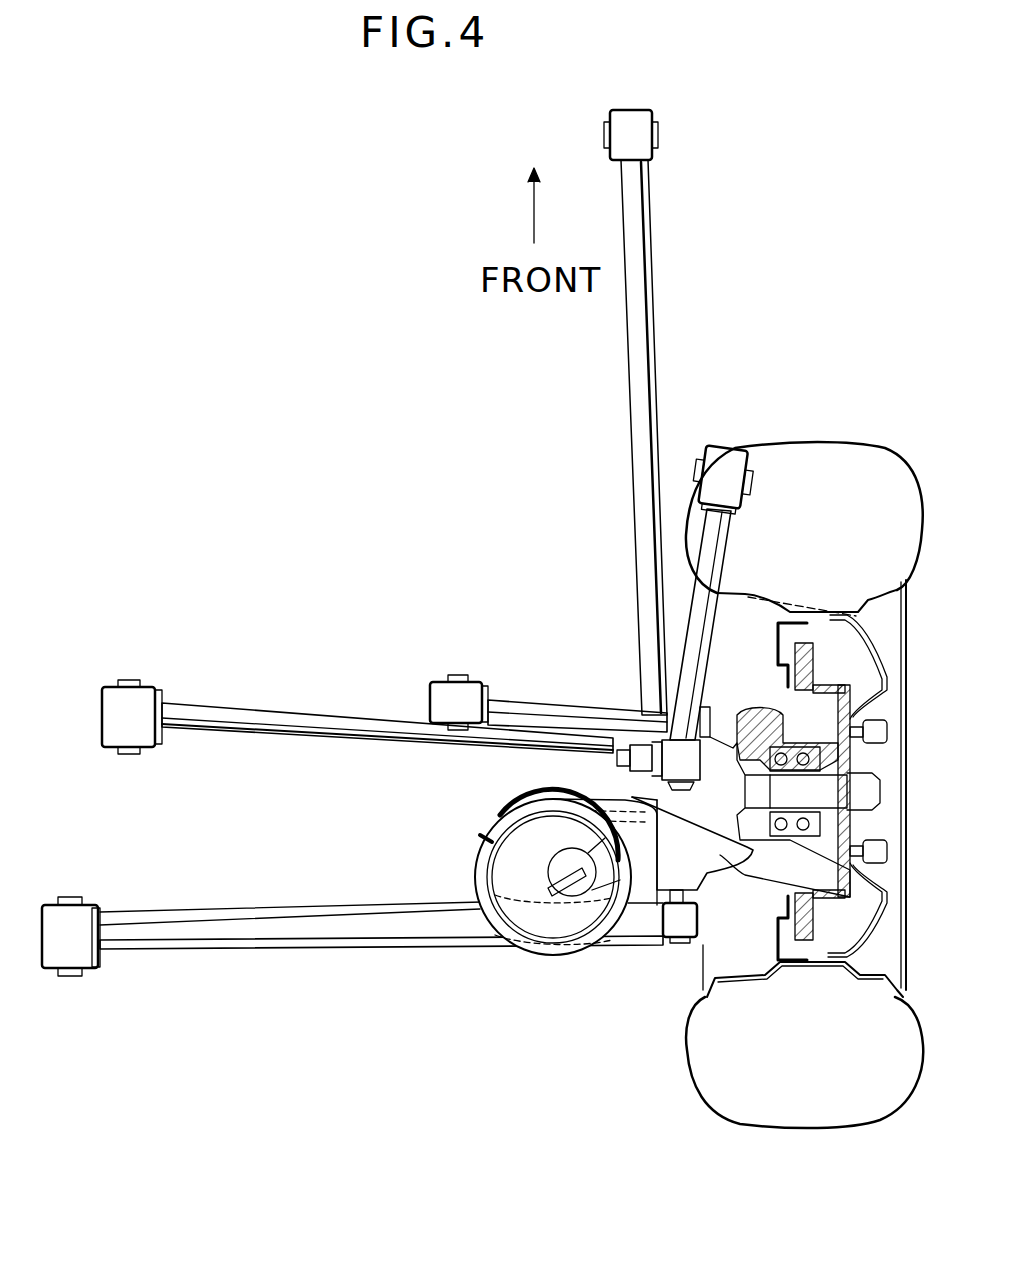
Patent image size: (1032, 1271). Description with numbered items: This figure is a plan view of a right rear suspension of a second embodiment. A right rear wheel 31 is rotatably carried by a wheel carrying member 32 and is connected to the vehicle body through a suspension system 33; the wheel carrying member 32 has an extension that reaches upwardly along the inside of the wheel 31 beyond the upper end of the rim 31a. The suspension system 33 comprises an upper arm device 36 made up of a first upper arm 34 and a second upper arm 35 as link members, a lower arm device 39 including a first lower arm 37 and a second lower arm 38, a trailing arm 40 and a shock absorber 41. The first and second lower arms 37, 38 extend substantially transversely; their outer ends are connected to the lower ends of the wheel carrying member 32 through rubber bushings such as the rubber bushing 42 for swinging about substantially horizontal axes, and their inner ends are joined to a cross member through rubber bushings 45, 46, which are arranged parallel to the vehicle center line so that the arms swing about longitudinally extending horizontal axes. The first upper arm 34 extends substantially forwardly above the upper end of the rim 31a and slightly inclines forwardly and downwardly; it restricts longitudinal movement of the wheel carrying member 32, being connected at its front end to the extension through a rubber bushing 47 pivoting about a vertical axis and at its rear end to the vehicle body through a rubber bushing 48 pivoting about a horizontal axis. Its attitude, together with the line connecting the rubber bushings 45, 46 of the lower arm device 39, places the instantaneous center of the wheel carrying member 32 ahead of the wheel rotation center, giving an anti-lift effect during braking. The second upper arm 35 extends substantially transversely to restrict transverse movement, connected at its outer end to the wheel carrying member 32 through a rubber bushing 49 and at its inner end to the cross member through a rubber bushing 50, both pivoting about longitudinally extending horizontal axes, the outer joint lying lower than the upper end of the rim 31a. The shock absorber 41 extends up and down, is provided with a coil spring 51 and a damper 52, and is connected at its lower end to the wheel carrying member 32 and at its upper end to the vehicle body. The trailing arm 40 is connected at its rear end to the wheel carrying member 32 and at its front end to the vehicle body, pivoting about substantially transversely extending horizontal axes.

The right rear wheel 31 is at (835, 443).
The rim 31a is at (781, 606).
The wheel carrying member 32 is at (706, 813).
The suspension system 33 is at (516, 629).
The first upper arm 34 is at (705, 620).
The second upper arm 35 is at (530, 707).
The upper arm device 36 is at (598, 639).
The first lower arm 37 is at (340, 900).
The second lower arm 38 is at (357, 727).
The lower arm device 39 is at (366, 775).
The trailing arm 40 is at (642, 335).
The shock absorber 41 is at (482, 830).
The rubber bushing 42 is at (700, 940).
The rubber bushing 45 is at (87, 960).
The rubber bushing 46 is at (155, 698).
The rubber bushing 47 is at (716, 740).
The rubber bushing 48 is at (732, 452).
The rubber bushing 49 is at (663, 713).
The rubber bushing 50 is at (473, 690).
The coil spring 51 is at (498, 823).
The damper 52 is at (565, 857).